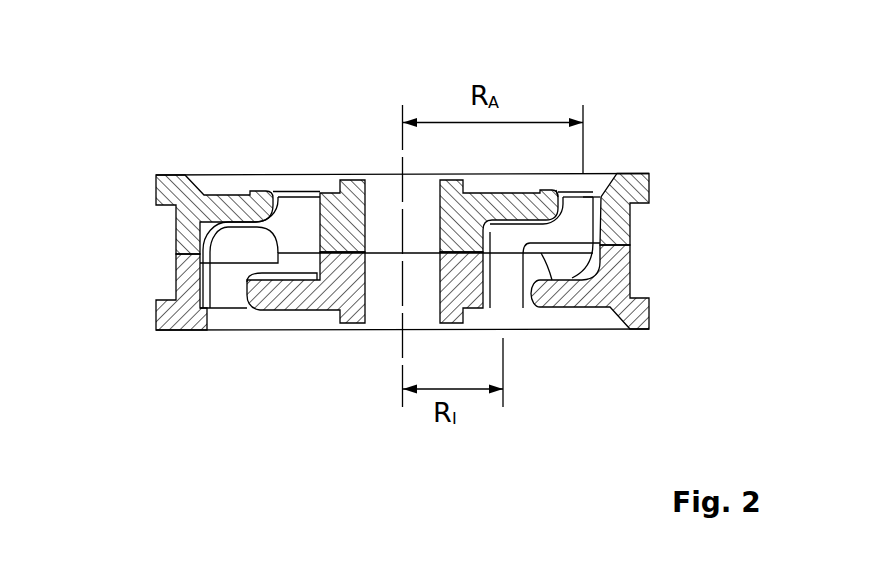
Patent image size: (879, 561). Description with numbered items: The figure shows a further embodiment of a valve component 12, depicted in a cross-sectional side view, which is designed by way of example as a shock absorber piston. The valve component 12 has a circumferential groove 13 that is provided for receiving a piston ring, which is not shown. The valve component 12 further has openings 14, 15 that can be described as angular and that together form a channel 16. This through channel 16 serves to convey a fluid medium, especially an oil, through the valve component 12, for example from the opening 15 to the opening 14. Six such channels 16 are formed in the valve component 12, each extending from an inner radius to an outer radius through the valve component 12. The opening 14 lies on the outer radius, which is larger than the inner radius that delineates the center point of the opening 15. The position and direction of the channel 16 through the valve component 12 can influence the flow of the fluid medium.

The valve component 12 is at (232, 153).
The circumferential groove 13 is at (177, 242).
The opening 14 is at (583, 197).
The opening 15 is at (522, 308).
The channel 16 is at (560, 240).